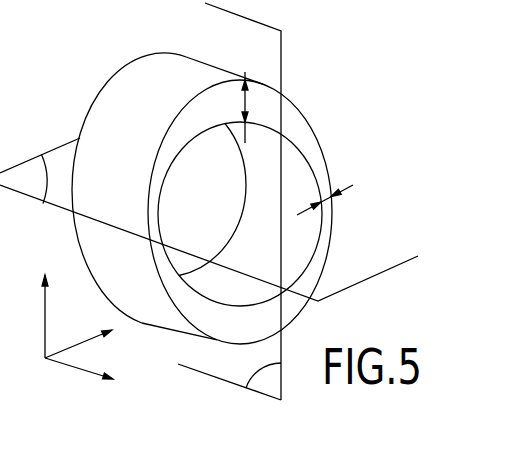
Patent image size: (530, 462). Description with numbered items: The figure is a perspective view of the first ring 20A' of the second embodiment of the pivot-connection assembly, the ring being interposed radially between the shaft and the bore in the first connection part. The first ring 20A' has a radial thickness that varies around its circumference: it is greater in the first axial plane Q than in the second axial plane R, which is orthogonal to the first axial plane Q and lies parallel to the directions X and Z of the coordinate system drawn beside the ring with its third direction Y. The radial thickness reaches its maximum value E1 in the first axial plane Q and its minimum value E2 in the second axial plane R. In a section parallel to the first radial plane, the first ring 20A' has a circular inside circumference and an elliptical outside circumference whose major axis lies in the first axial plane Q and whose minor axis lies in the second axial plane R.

The first ring 20A' is at (233, 197).
The maximum radial thickness E1 is at (256, 97).
The minimum radial thickness E2 is at (331, 189).
The second axial plane R is at (31, 179).
The first axial plane Q is at (229, 381).
The direction X is at (87, 338).
The direction Y is at (43, 303).
The direction Z is at (88, 377).